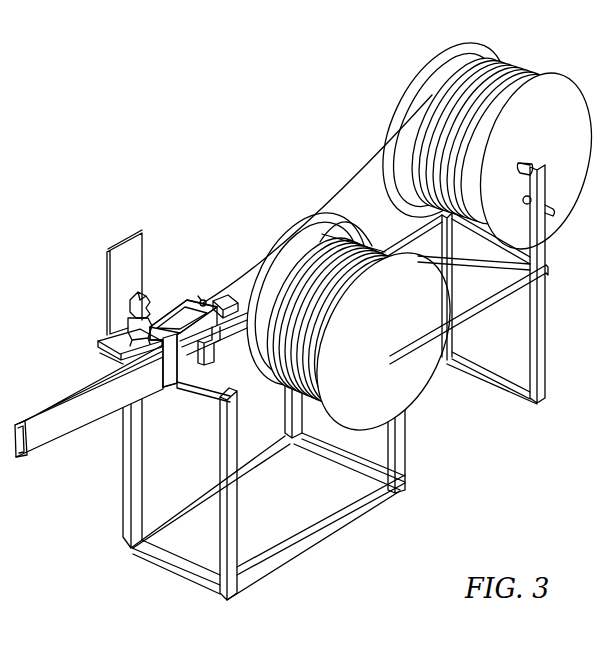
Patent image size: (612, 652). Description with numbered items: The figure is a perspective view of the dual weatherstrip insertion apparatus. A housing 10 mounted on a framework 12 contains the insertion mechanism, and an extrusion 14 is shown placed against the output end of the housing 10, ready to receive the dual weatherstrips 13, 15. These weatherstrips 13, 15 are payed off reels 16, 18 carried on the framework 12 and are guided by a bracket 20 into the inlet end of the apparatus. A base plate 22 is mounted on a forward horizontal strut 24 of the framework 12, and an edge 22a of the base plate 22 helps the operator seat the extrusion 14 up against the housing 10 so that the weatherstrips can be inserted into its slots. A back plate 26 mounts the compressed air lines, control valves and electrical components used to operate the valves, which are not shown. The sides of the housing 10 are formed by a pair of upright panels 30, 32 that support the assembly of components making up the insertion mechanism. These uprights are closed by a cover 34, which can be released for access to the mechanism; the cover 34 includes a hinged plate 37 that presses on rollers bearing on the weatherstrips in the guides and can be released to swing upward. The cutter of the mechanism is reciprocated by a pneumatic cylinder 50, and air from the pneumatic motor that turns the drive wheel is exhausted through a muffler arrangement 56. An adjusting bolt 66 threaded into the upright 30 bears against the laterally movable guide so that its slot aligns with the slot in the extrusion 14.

The housing 10 is at (183, 336).
The framework 12 is at (366, 311).
The weatherstrip 13 is at (428, 97).
The extrusion 14 is at (50, 452).
The weatherstrip 15 is at (340, 210).
The reel 16 is at (418, 380).
The reel 18 is at (428, 62).
The bracket 20 is at (218, 298).
The base plate 22 is at (100, 347).
The edge of the base plate 22a is at (108, 362).
The forward horizontal strut 24 is at (208, 390).
The back plate 26 is at (108, 252).
The upright panel 30 is at (233, 383).
The upright panel 32 is at (98, 340).
The cover 34 is at (174, 318).
The plate 37 is at (198, 296).
The pneumatic cylinder 50 is at (128, 323).
The muffler arrangement 56 is at (127, 303).
The adjusting bolt 66 is at (204, 363).